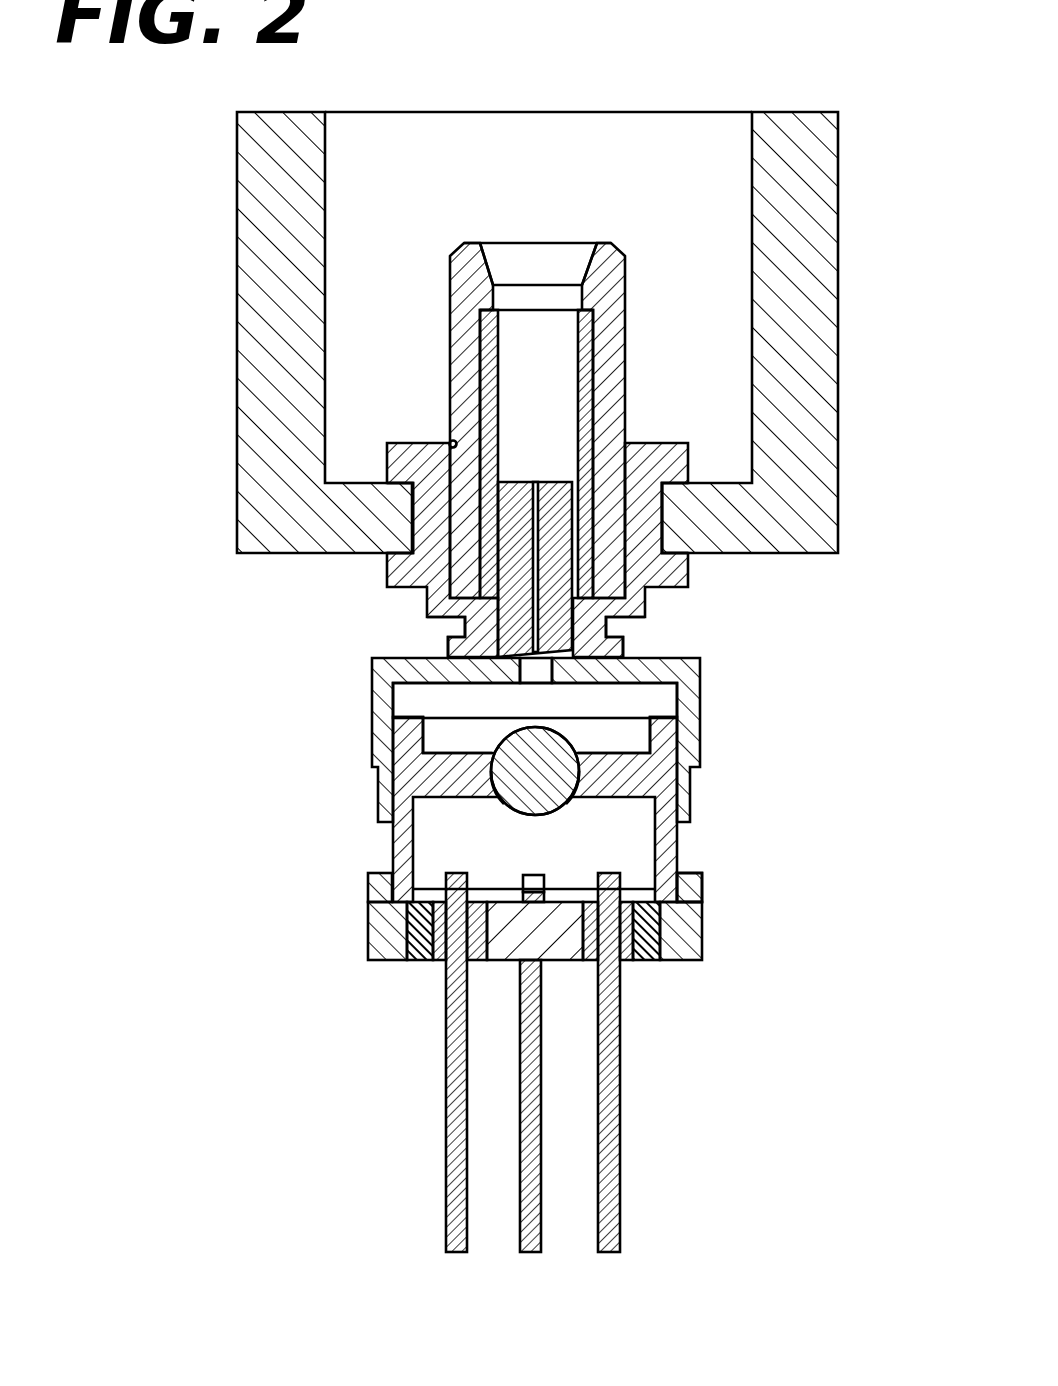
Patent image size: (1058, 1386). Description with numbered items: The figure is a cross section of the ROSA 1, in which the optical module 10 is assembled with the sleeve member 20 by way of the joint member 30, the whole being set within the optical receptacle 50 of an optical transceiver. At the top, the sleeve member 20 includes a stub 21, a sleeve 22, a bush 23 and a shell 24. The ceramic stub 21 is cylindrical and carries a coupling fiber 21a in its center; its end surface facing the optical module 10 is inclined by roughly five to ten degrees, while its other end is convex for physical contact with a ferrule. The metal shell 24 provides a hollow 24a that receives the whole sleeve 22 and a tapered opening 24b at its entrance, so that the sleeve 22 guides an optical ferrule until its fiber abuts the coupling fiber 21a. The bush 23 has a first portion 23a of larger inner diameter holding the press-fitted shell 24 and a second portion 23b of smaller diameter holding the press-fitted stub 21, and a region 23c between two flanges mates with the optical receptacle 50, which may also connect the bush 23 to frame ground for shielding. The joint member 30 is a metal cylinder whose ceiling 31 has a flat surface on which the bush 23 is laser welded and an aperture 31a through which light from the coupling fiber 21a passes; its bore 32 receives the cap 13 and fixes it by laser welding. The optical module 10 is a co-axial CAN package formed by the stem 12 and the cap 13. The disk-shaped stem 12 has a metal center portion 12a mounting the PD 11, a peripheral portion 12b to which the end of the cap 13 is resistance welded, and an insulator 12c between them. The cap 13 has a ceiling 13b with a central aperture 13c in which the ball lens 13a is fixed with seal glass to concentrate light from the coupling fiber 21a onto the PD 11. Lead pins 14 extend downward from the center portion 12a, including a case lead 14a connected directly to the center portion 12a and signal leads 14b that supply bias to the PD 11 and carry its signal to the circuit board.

The ROSA 1 is at (610, 150).
The optical module 10 is at (215, 712).
The PD 11 is at (547, 891).
The stem 12 is at (702, 952).
The center portion 12a is at (503, 956).
The peripheral portion 12b is at (702, 908).
The insulator 12c is at (406, 926).
The cap 13 is at (392, 845).
The lens 13a is at (563, 806).
The ceiling 13b is at (430, 779).
The aperture 13c is at (500, 798).
The lead pins 14 is at (627, 1262).
The case lead 14a is at (520, 1222).
The signal leads 14b is at (446, 1162).
The sleeve member 20 is at (215, 222).
The stub 21 is at (525, 480).
The coupling fiber 21a is at (541, 482).
The sleeve 22 is at (598, 345).
The bush 23 is at (690, 577).
The first portion 23a is at (450, 441).
The second portion 23b is at (465, 633).
The region between two flanges 23c is at (412, 515).
The shell 24 is at (452, 270).
The hollow 24a is at (485, 325).
The tapered opening 24b is at (567, 262).
The joint member 30 is at (312, 655).
The ceiling 31 is at (700, 661).
The aperture 31a is at (540, 684).
The bore 32 is at (680, 698).
The optical receptacle 50 is at (838, 177).